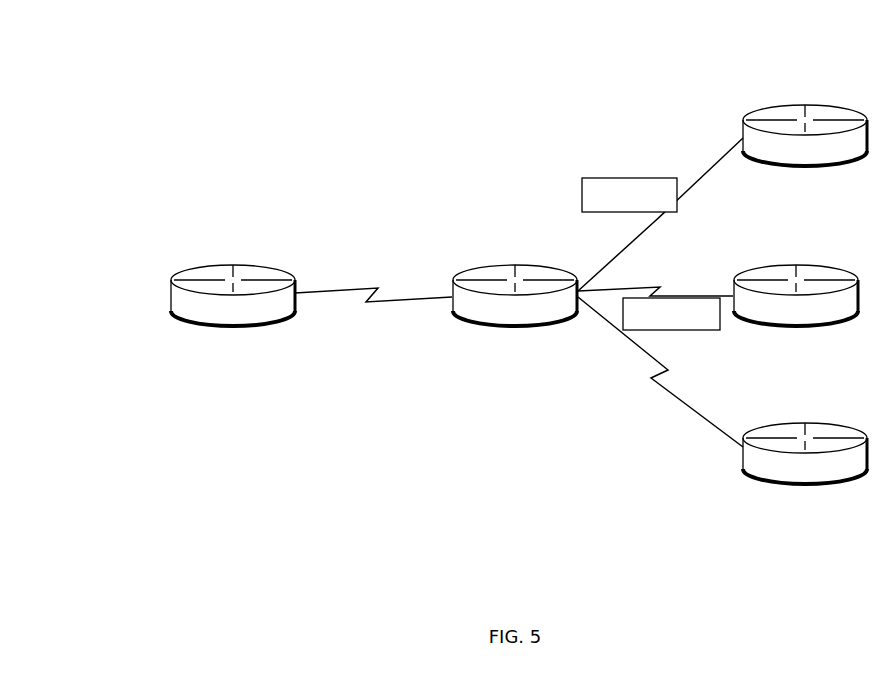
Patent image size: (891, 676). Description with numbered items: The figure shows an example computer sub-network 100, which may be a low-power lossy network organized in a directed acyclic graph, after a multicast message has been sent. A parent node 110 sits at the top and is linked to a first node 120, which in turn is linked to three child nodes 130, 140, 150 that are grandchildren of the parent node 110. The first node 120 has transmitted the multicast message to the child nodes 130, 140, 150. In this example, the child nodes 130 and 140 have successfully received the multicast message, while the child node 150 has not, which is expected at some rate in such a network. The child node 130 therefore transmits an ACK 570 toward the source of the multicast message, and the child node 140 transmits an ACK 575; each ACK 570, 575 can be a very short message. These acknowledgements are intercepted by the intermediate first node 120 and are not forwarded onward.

The sub-network 100 is at (120, 49).
The parent node 110 is at (233, 265).
The first node 120 is at (515, 265).
The child node 130 is at (805, 105).
The child node 140 is at (796, 265).
The child node 150 is at (805, 423).
The ACK 570 is at (625, 178).
The ACK 575 is at (676, 330).